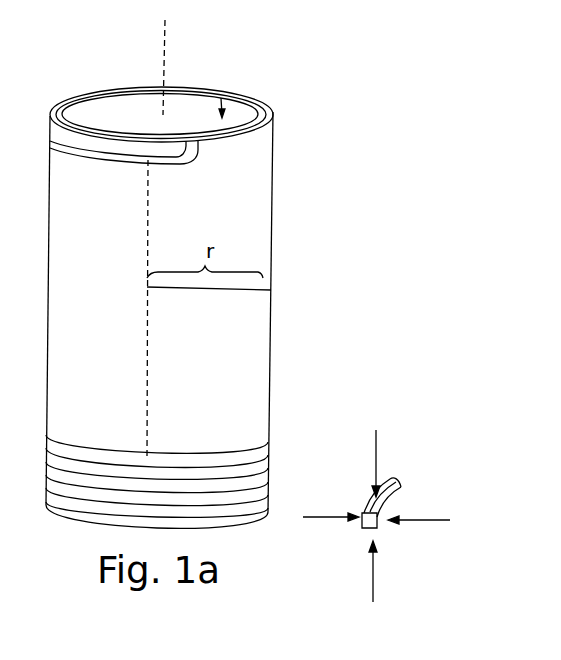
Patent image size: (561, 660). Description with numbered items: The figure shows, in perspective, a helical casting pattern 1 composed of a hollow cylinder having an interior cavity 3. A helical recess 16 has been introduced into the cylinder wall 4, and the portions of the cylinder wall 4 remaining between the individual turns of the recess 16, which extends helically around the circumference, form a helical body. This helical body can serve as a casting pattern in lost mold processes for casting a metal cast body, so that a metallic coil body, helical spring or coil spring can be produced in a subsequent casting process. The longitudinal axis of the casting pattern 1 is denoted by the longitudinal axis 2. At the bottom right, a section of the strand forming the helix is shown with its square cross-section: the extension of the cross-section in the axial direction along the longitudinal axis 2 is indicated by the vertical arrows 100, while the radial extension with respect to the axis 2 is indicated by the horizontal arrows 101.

The helical casting pattern 1 is at (272, 217).
The longitudinal axis 2 is at (168, 56).
The interior cavity 3 is at (225, 91).
The cylinder wall 4 is at (272, 108).
The helical recess 16 is at (246, 444).
The vertical arrows 100 is at (380, 450).
The horizontal arrows 101 is at (433, 527).